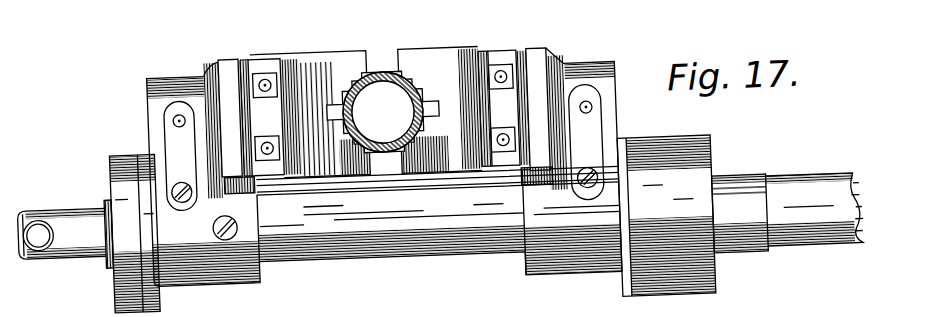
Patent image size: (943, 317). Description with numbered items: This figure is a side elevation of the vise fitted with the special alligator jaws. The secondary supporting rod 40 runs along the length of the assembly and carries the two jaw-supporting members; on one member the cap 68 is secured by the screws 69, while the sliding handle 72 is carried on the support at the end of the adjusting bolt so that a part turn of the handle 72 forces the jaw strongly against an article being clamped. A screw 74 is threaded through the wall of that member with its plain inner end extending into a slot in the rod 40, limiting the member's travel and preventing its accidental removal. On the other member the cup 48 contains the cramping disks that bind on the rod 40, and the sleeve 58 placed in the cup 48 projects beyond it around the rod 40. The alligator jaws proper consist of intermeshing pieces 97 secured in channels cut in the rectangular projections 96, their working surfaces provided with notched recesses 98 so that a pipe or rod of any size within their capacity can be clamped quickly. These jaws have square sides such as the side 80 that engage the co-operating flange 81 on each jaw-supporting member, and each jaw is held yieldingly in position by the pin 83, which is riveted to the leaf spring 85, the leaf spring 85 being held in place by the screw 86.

The secondary supporting rod 40 is at (768, 187).
The cup 48 is at (677, 159).
The sleeve 58 is at (733, 186).
The cap 68 is at (118, 160).
The screws 69 is at (97, 240).
The sliding handle 72 is at (34, 223).
The screw 74 is at (222, 234).
The side of jaw 80 is at (232, 61).
The flange 81 is at (237, 177).
The pin 83 is at (173, 112).
The leaf spring 85 is at (169, 127).
The screw 86 is at (208, 222).
The rectangular projections 96 is at (277, 99).
The intermeshing pieces 97 is at (322, 50).
The notched recesses 98 is at (418, 81).